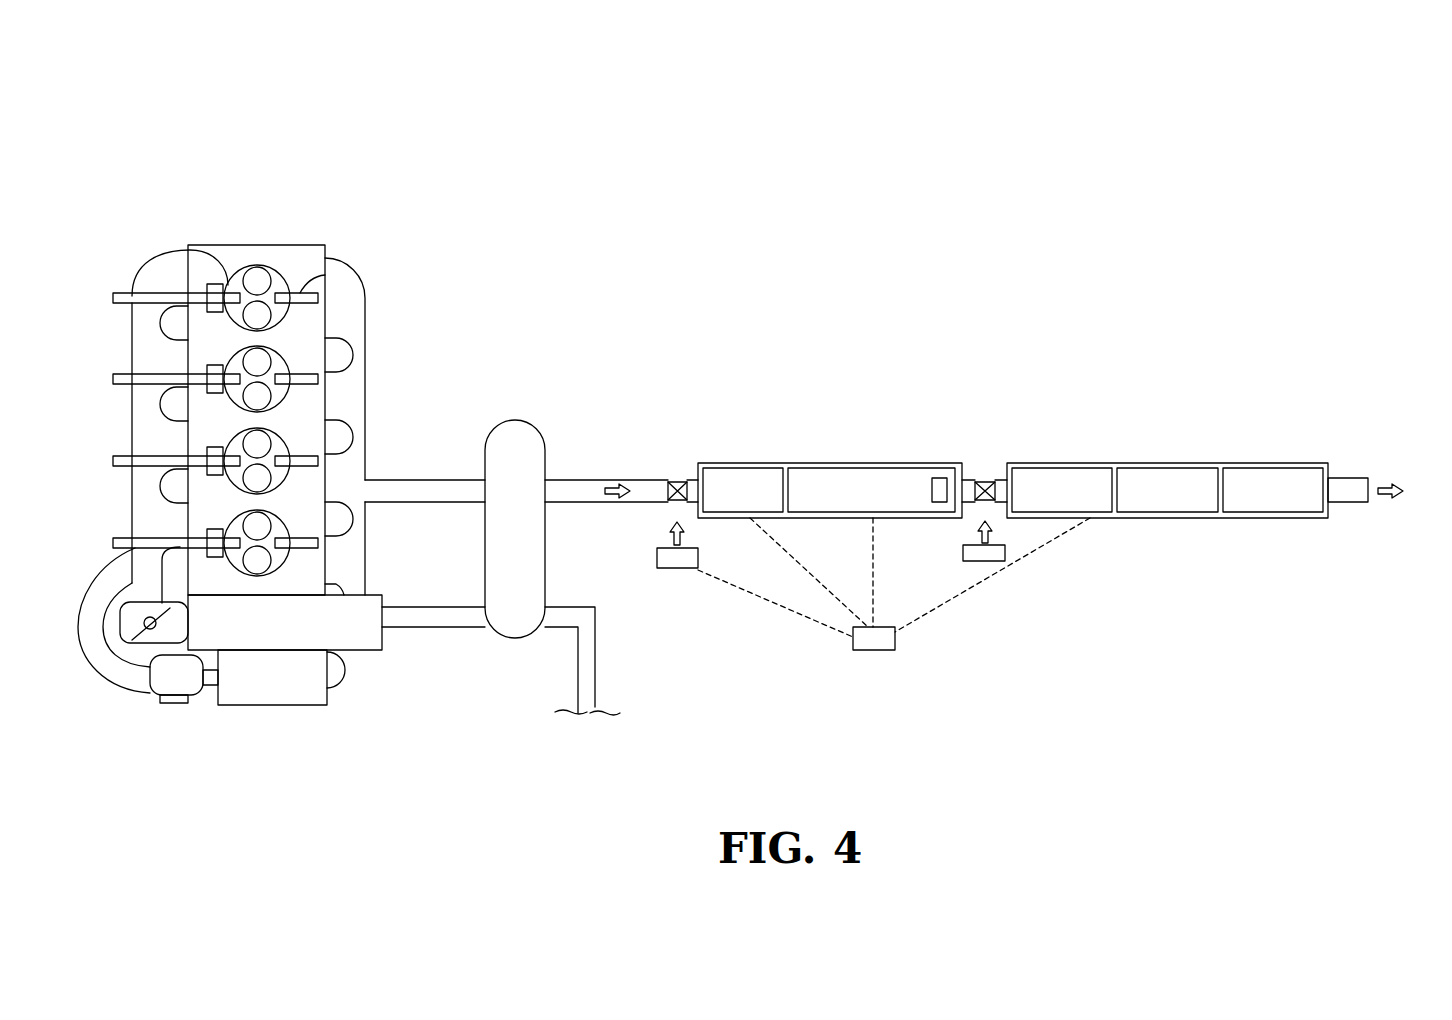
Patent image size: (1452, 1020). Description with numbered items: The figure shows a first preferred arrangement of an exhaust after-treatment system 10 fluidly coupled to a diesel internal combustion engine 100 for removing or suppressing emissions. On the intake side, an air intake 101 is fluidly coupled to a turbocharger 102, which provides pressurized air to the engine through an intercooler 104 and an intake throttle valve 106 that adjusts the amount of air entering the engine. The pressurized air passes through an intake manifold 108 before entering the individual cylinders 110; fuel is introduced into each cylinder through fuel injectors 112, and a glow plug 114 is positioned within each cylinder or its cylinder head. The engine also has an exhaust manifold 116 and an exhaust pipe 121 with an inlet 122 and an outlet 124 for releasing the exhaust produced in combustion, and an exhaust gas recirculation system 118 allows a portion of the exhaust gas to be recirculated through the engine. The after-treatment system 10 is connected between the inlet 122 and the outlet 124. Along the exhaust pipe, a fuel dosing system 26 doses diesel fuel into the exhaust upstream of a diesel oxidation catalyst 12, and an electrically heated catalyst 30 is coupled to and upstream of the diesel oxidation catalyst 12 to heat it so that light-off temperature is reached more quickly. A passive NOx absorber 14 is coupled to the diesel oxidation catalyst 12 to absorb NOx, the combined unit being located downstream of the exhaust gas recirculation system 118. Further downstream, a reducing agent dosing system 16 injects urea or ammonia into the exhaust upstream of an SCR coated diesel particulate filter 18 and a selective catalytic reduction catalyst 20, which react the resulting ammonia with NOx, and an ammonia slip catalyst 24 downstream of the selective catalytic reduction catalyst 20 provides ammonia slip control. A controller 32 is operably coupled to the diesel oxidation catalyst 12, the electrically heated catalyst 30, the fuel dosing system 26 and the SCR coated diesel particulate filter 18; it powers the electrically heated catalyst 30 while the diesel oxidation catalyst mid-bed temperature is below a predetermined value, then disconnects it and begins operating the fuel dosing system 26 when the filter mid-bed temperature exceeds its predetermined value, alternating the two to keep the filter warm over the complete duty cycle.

The exhaust after-treatment system 10 is at (1226, 313).
The diesel oxidation catalyst (DOC) 12 is at (866, 463).
The passive NOx absorber (PNA) 14 is at (940, 478).
The reducing agent dosing system 16 is at (963, 555).
The SCR coated diesel particulate filter (SDPF) 18 is at (1065, 463).
The selective catalytic reduction (SCR) 20 is at (1170, 463).
The ammonia slip catalyst (ASC) 24 is at (1270, 463).
The fuel dosing system 26 is at (667, 570).
The electrically heated catalyst (EHC) 30 is at (718, 463).
The controller 32 is at (862, 650).
The internal combustion engine 100 is at (253, 158).
The air intake 101 is at (257, 245).
The turbocharger 102 is at (513, 640).
The intercooler 104 is at (355, 633).
The intake throttle valve 106 is at (120, 622).
The intake manifold 108 is at (140, 433).
The cylinders 110 is at (228, 283).
The fuel injectors 112 is at (207, 372).
The glow plug 114 is at (325, 277).
The exhaust manifold 116 is at (368, 345).
The exhaust gas recirculation (EGR) system 118 is at (275, 683).
The exhaust pipe 121 is at (577, 478).
The inlet 122 is at (365, 488).
The outlet 124 is at (1368, 502).